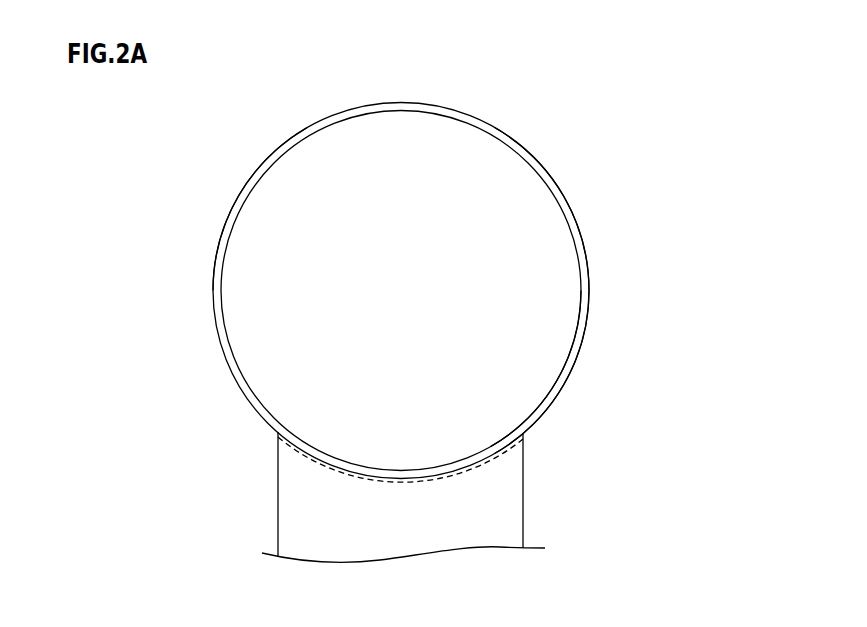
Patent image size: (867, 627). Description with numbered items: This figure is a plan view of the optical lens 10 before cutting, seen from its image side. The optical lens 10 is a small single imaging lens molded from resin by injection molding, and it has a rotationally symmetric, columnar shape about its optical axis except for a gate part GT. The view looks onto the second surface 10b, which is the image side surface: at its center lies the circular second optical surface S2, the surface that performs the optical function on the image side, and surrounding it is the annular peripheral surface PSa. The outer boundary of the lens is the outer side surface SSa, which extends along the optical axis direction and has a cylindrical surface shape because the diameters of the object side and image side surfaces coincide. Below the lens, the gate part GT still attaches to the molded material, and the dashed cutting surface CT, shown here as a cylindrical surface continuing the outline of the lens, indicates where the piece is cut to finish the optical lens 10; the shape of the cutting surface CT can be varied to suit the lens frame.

The optical lens 10 is at (590, 148).
The second surface 10b is at (605, 255).
The outer side surface SSa is at (213, 300).
The second optical surface S2 is at (530, 300).
The peripheral surface PSa is at (578, 342).
The cutting surface CT is at (328, 468).
The gate part GT is at (513, 487).